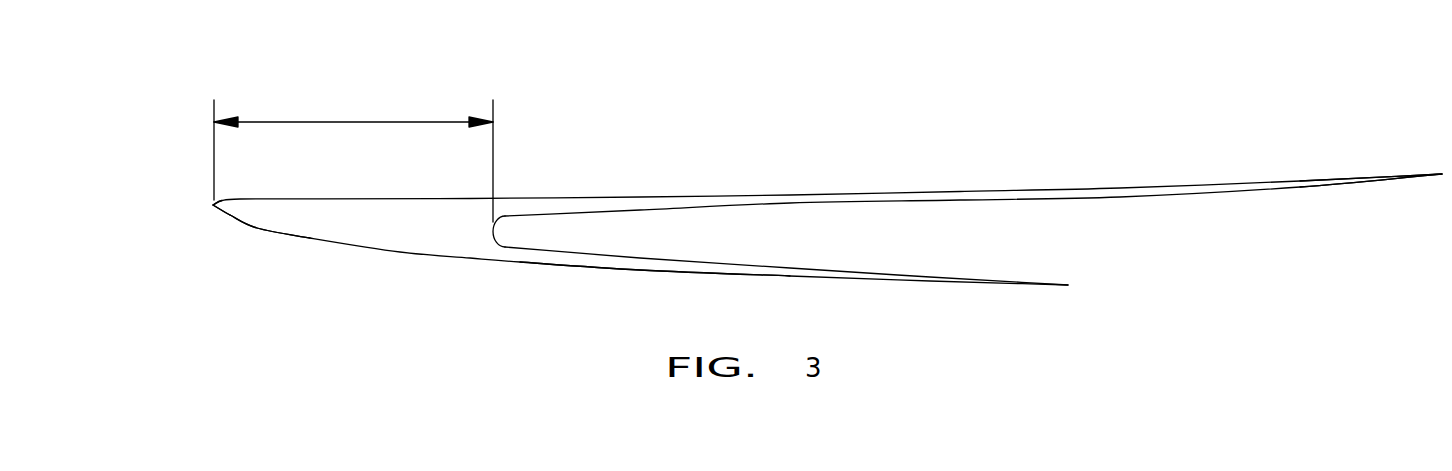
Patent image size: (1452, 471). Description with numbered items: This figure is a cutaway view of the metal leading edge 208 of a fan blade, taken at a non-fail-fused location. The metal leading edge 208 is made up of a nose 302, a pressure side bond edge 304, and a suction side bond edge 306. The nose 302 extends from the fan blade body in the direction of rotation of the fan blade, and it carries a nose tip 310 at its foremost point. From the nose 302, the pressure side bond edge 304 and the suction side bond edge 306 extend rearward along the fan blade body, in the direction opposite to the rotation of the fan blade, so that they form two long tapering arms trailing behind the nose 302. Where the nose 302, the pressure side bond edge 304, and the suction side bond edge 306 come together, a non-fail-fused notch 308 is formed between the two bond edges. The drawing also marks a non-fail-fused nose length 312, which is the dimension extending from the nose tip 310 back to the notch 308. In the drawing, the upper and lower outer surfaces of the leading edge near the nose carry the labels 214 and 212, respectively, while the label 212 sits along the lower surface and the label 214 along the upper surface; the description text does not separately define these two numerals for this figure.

The metal leading edge 208 is at (784, 183).
The pressure side 212 is at (402, 253).
The suction side 214 is at (357, 198).
The nose 302 is at (257, 228).
The pressure side bond edge 304 is at (1360, 187).
The suction side bond edge 306 is at (638, 272).
The non-fail-fused notch 308 is at (497, 231).
The nose tip 310 is at (213, 205).
The non-fail-fused nose length 312 is at (353, 122).